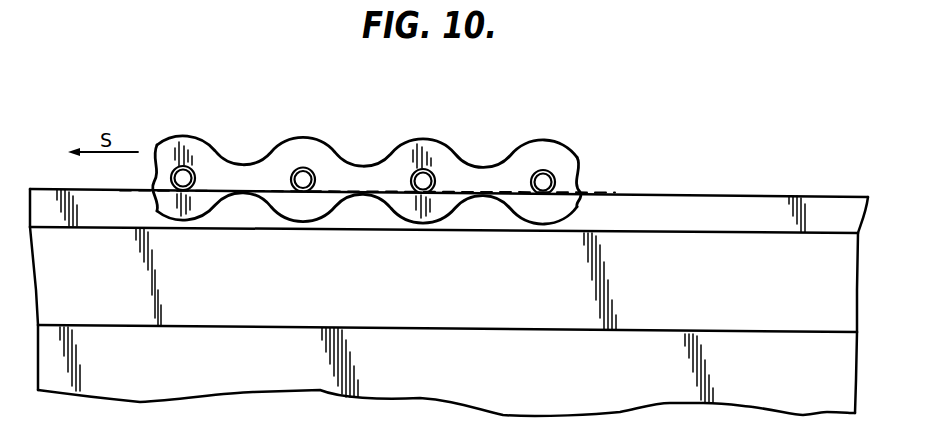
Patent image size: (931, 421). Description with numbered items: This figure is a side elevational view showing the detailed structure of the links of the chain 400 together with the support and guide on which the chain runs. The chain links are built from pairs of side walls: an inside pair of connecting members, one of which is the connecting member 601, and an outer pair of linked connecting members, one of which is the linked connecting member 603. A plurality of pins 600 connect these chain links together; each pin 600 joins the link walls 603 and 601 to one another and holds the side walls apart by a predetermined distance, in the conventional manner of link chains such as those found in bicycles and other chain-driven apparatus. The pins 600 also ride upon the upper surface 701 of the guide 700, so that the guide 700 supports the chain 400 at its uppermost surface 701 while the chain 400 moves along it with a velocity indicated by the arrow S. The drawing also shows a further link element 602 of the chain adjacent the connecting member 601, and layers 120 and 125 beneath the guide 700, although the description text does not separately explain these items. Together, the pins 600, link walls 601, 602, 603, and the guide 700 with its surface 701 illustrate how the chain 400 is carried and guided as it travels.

The chain 400 is at (297, 118).
The pins 600 is at (306, 168).
The connecting member 601 is at (235, 182).
The outer link plate 602 is at (247, 195).
The linked connecting member 603 is at (163, 158).
The guide 700 is at (123, 221).
The upper surface 701 is at (64, 189).
The intermediate layer 120 is at (385, 287).
The base layer 125 is at (519, 376).